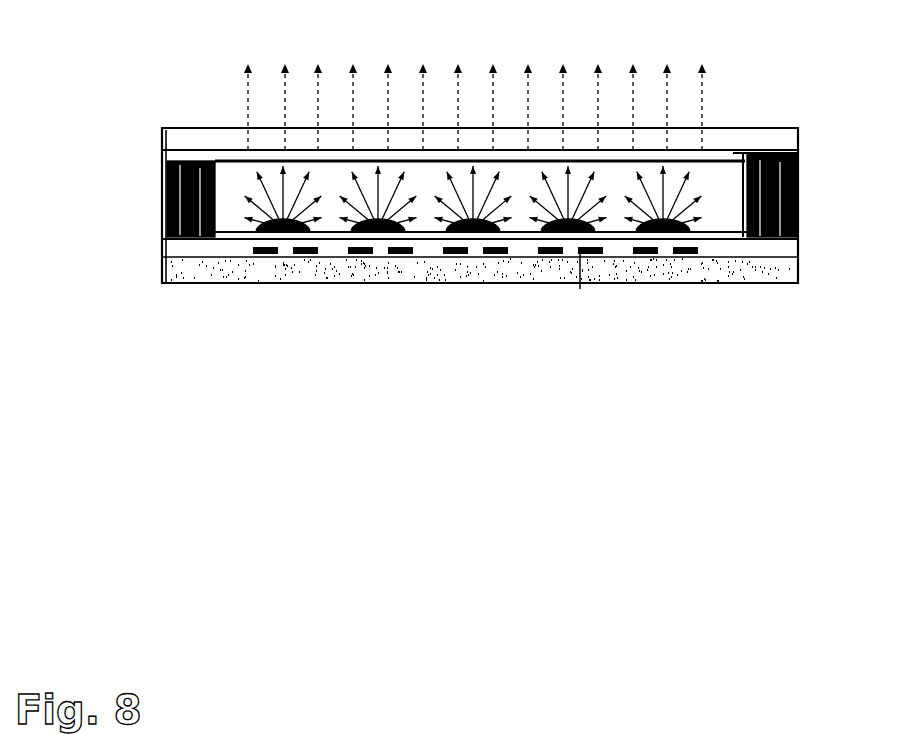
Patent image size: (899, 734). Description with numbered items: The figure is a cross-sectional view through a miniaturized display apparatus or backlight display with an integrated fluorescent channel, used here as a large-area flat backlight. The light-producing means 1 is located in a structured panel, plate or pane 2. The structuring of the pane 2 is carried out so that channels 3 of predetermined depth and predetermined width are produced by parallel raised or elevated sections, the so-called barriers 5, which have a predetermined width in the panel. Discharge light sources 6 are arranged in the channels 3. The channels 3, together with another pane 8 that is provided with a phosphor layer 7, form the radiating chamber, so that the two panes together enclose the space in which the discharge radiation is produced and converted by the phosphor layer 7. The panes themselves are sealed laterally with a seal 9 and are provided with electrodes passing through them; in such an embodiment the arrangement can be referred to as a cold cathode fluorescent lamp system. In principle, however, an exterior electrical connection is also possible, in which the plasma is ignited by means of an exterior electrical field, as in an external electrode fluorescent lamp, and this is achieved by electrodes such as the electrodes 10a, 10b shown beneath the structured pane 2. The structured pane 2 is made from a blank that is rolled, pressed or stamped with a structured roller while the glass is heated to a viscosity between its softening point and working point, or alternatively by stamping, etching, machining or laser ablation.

The light-producing means 1 is at (697, 243).
The structured pane 2 is at (170, 250).
The channels 3 is at (238, 196).
The barriers 5 is at (617, 187).
The discharge light sources 6 is at (688, 229).
The phosphor layer 7 is at (770, 144).
The pane 8 is at (188, 149).
The seal 9 is at (762, 193).
The electrode 10a is at (363, 257).
The electrode 10b is at (440, 318).